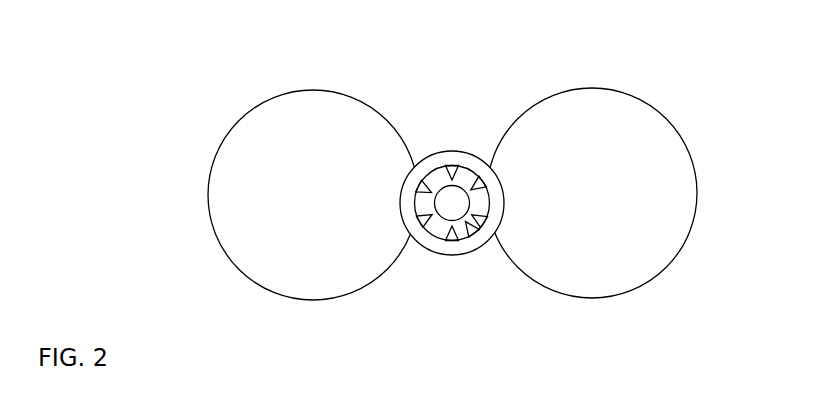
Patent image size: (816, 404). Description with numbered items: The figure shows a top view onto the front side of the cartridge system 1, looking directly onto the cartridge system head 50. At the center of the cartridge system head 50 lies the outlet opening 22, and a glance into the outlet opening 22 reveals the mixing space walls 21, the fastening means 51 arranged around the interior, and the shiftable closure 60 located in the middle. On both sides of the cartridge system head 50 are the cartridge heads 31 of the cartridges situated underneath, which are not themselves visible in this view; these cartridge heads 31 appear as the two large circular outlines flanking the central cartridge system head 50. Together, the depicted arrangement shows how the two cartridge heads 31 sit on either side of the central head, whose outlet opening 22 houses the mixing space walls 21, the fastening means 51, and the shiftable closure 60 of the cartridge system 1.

The cartridge system 1 is at (395, 191).
The mixing space walls 21 is at (470, 239).
The outlet opening 22 is at (457, 169).
The cartridge heads 31 is at (289, 161).
The cartridge system head 50 is at (470, 148).
The fastening means 51 is at (420, 233).
The shiftable closure 60 is at (448, 194).